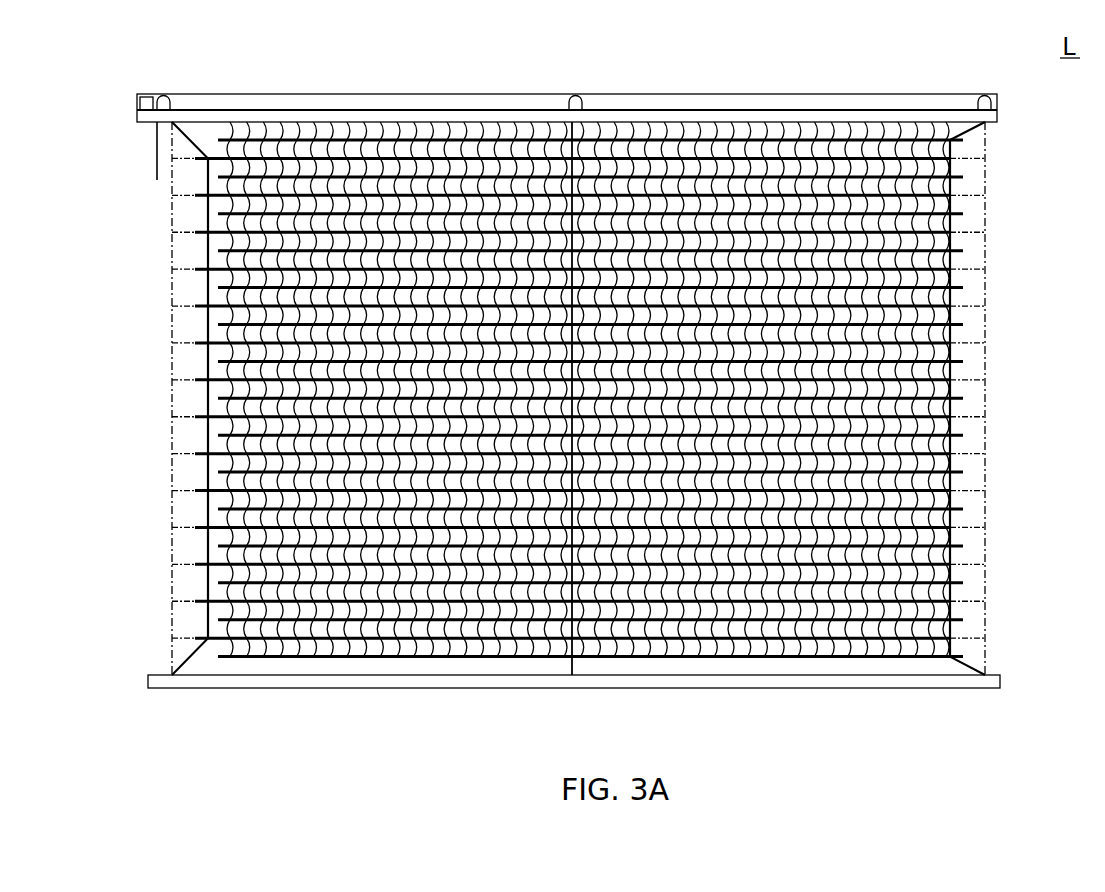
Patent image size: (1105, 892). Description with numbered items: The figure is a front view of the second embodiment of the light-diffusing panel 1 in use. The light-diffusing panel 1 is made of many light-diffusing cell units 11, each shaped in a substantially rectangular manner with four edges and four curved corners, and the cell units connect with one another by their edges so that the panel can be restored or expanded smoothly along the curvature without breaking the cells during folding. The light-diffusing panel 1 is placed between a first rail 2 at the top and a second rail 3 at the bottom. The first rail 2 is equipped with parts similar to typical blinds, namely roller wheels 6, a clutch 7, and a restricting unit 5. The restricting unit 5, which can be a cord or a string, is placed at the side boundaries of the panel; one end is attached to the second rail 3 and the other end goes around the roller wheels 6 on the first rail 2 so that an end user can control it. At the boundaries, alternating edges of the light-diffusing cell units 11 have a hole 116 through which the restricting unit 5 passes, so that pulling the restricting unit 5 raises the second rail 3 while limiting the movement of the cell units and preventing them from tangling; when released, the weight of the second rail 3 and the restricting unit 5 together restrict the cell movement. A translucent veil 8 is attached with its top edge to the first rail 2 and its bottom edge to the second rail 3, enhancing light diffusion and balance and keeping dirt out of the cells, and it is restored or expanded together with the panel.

The light-diffusing panel 1 is at (1005, 362).
The first rail 2 is at (998, 115).
The second rail 3 is at (1000, 677).
The restricting unit 5 is at (960, 151).
The roller wheels 6 is at (165, 96).
The clutch 7 is at (142, 96).
The translucent veil 8 is at (172, 257).
The light-diffusing cell units 11 is at (902, 402).
The hole 116 is at (953, 206).